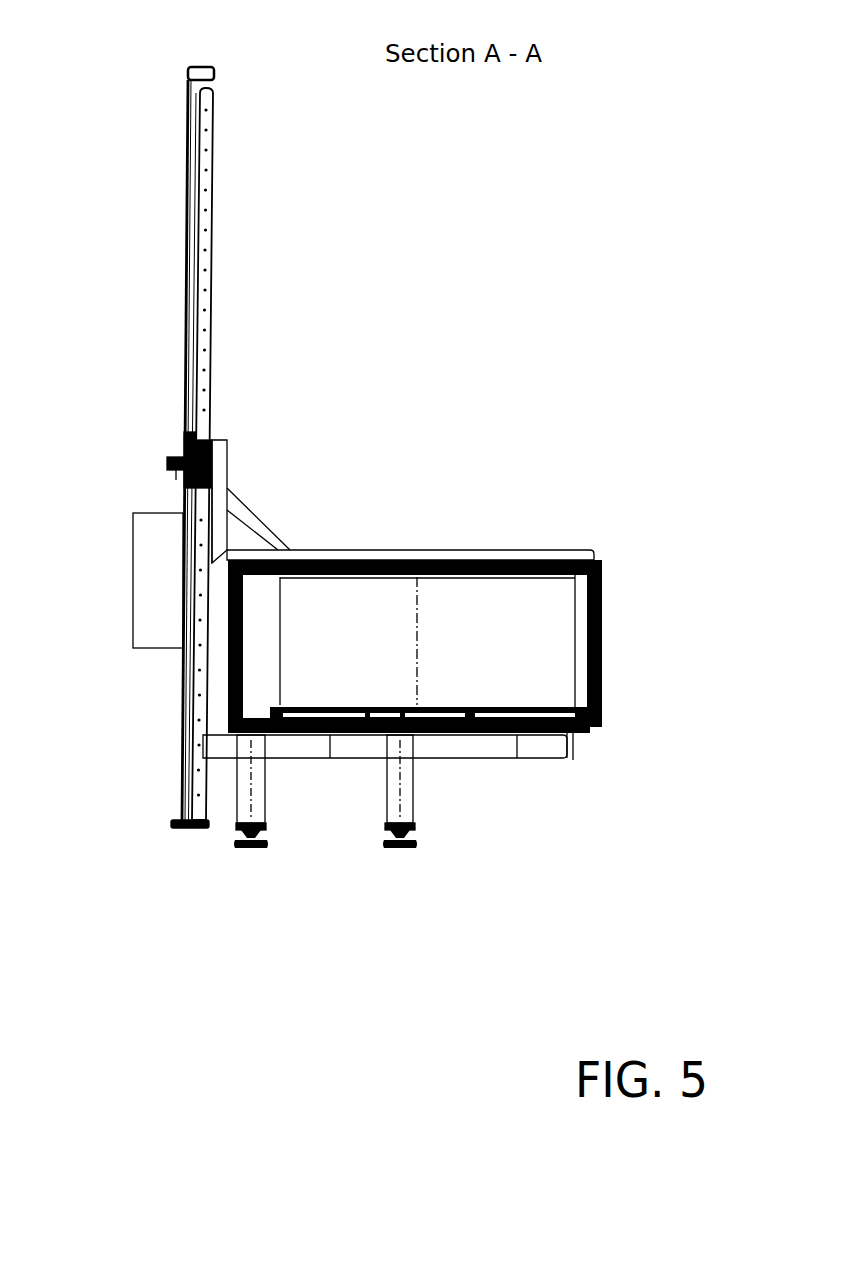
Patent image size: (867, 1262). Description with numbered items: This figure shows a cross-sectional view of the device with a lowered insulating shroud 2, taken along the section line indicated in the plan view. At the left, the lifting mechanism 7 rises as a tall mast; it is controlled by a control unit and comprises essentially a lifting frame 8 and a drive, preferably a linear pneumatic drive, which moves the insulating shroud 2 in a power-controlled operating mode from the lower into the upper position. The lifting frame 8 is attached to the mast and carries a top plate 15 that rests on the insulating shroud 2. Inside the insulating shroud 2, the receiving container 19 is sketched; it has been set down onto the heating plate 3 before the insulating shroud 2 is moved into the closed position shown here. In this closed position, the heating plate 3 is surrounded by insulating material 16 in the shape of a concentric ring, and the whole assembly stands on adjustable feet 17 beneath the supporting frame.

The lifting mechanism 7 is at (142, 263).
The lifting frame 8 is at (214, 431).
The top plate with struts 15 is at (237, 562).
The insulating shroud 2 is at (597, 553).
The receiving container 19 is at (520, 652).
The heating plate 3 is at (520, 730).
The insulating material 16 is at (573, 760).
The adjustable feet 17 is at (255, 850).